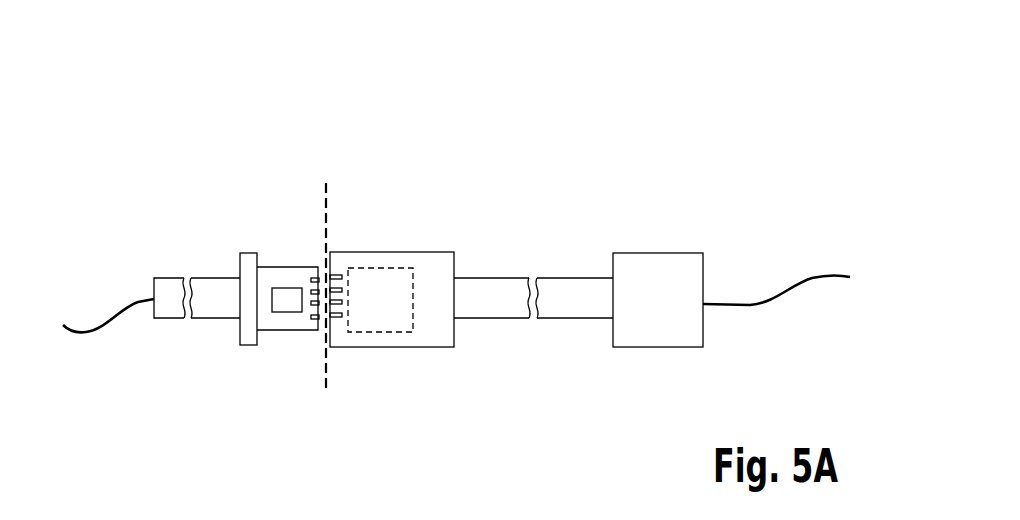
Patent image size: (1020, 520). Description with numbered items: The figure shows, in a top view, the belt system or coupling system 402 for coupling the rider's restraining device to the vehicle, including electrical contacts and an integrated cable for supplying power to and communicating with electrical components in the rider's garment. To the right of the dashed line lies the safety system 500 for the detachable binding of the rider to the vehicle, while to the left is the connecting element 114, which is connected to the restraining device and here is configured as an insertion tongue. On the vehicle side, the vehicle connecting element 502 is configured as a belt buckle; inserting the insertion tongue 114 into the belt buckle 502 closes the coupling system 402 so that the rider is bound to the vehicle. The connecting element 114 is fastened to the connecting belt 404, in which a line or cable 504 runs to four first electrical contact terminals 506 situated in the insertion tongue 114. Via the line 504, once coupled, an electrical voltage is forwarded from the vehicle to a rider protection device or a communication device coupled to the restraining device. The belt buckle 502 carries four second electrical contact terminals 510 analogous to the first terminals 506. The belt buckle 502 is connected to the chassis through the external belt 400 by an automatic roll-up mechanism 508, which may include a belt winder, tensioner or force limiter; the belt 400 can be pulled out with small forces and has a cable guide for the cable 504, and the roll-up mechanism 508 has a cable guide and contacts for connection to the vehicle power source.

The line or cable 504 is at (97, 324).
The connecting belt 404 is at (175, 286).
The connecting element 114 is at (250, 260).
The first electrical contact terminals 506 is at (314, 306).
The second electrical contact terminals 510 is at (334, 306).
The vehicle connecting element 502 is at (398, 262).
The external belt 400 is at (480, 290).
The automatic roll-up mechanism 508 is at (667, 266).
The coupling system 402 is at (514, 123).
The safety system 500 is at (692, 92).